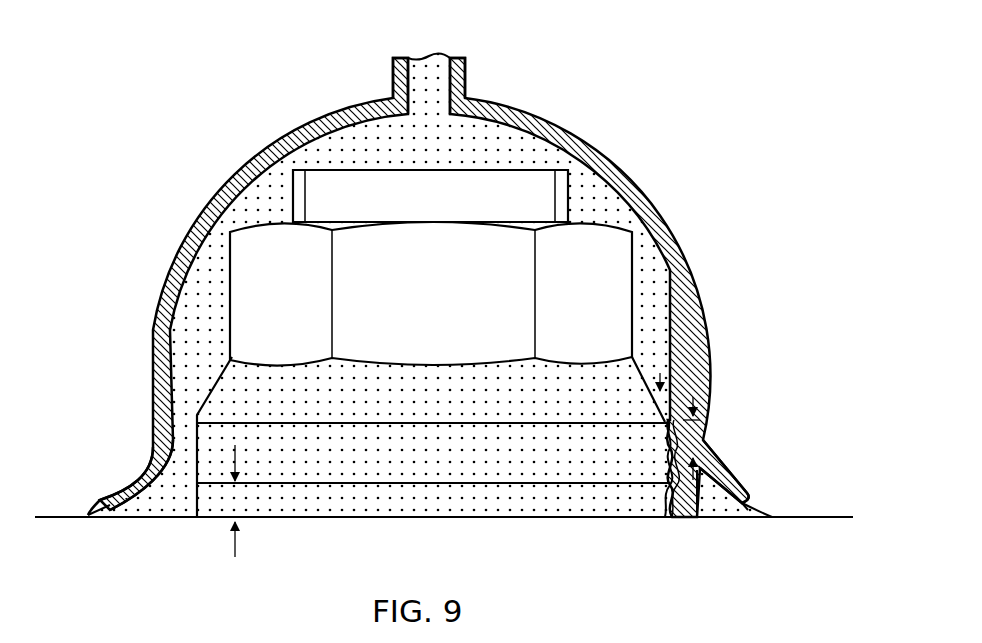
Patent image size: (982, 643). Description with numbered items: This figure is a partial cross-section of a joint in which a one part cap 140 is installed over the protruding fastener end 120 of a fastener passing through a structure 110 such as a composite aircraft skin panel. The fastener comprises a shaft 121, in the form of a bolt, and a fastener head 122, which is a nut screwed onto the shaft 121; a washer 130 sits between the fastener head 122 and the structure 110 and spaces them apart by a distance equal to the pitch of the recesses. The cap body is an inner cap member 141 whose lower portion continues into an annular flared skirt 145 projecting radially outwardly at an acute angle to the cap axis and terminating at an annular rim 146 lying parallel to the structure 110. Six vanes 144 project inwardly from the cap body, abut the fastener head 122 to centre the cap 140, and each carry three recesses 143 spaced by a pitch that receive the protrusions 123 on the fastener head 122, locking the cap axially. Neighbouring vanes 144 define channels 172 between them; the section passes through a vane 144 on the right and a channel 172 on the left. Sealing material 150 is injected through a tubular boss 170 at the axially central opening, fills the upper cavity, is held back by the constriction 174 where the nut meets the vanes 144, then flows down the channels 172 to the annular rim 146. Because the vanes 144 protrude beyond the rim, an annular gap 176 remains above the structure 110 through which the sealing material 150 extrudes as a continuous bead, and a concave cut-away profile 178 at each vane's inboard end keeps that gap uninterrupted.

The structure 110 is at (803, 519).
The fastener end 120 is at (527, 150).
The shaft 121 is at (548, 195).
The fastener head 122 is at (610, 277).
The protrusions 123 is at (663, 430).
The washer 130 is at (527, 505).
The cap 140 is at (459, 287).
The inner cap member 141 is at (183, 243).
The recesses 143 is at (690, 462).
The vanes 144 is at (688, 370).
The annular flared skirt 145 is at (137, 468).
The annular rim 146 is at (107, 497).
The sealing material 150 is at (267, 178).
The boss 170 is at (466, 66).
The channels 172 is at (153, 448).
The constriction 174 is at (677, 353).
The annular gap 176 is at (92, 510).
The cut-away profile 178 is at (700, 488).